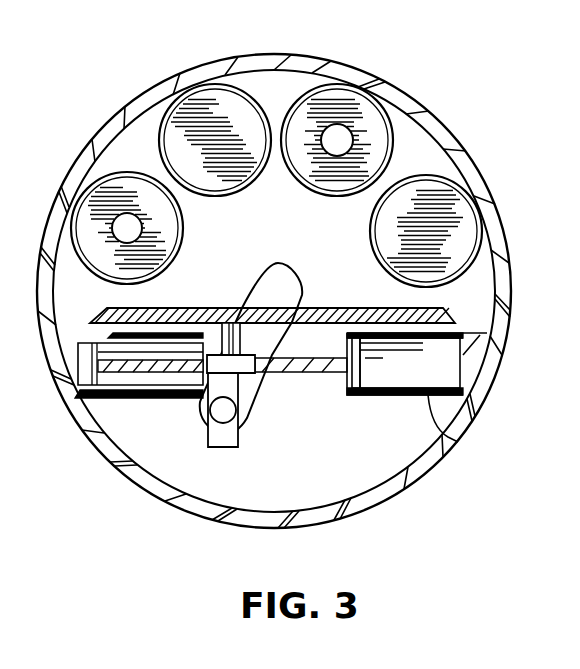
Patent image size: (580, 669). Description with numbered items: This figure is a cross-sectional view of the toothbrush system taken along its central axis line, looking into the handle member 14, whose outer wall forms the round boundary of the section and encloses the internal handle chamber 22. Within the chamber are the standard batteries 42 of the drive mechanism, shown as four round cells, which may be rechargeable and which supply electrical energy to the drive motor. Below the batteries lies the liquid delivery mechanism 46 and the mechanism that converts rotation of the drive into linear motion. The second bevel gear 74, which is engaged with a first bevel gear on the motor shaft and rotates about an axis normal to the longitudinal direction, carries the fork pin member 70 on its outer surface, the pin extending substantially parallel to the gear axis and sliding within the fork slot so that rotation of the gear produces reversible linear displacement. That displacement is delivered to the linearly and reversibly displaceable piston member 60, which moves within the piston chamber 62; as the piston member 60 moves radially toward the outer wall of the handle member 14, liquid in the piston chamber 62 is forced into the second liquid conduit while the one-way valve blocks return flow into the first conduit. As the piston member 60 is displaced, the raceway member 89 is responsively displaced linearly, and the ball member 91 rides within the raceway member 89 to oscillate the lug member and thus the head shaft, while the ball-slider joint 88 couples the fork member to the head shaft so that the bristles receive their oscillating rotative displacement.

The handle member 14 is at (422, 478).
The internal handle chamber 22 is at (180, 478).
The batteries 42 is at (100, 190).
The liquid delivery mechanism 46 is at (458, 442).
The piston member 60 is at (383, 396).
The piston chamber 62 is at (418, 360).
The fork pin member 70 is at (230, 308).
The second bevel gear 74 is at (340, 311).
The ball-slider joint 88 is at (243, 409).
The raceway member 89 is at (223, 447).
The ball member 91 is at (213, 414).